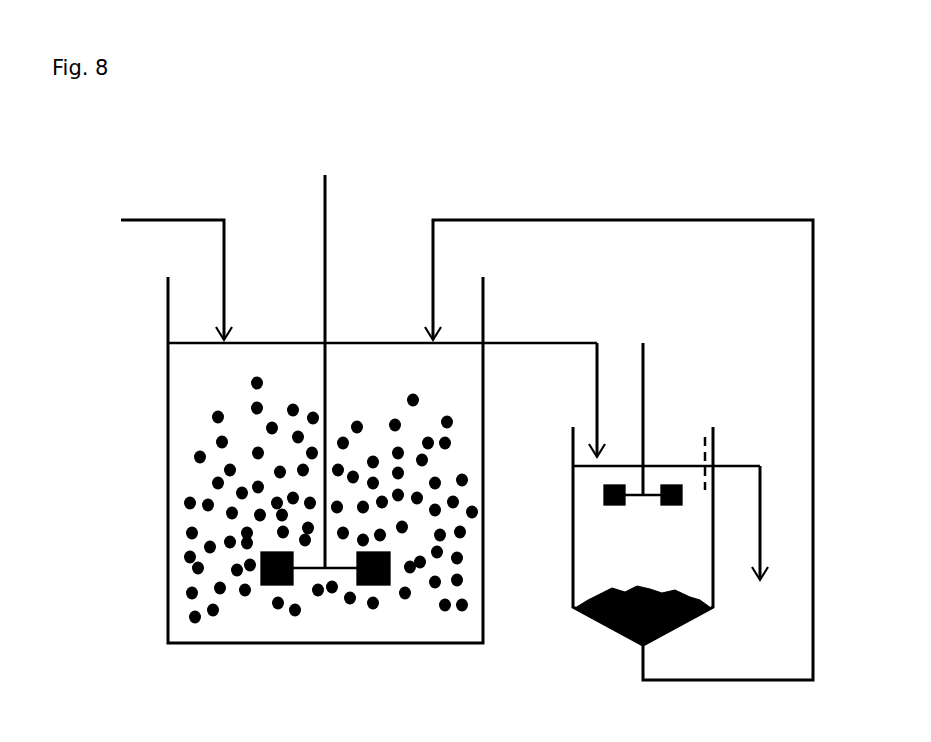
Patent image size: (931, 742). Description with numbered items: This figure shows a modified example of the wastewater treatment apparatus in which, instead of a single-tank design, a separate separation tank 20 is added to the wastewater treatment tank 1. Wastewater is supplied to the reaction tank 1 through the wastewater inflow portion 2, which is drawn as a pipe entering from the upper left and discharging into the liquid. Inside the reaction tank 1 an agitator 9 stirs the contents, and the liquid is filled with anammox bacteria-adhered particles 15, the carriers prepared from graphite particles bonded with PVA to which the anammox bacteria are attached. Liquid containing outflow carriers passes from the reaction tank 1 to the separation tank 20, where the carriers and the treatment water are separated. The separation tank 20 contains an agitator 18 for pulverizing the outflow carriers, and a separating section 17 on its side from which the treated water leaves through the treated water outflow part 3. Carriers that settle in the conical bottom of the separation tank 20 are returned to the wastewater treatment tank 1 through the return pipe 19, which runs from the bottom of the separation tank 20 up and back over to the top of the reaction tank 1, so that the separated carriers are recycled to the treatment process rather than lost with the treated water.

The reaction tank 1 is at (168, 312).
The wastewater inflow portion 2 is at (176, 263).
The treated water outflow part 3 is at (770, 523).
The agitator 9 is at (325, 218).
The anammox bacteria-adhered particle 15 is at (186, 503).
The separating section 17 is at (714, 462).
The agitator for pulverizing the outflow carriers 18 is at (645, 368).
The return pipe 19 is at (619, 431).
The separation tank 20 is at (573, 452).